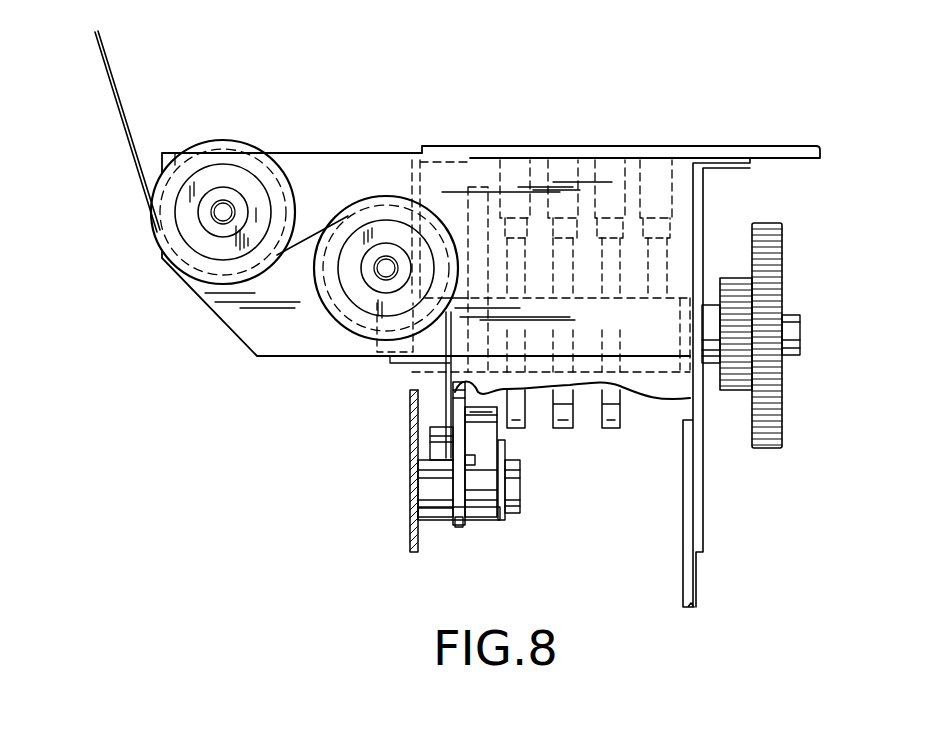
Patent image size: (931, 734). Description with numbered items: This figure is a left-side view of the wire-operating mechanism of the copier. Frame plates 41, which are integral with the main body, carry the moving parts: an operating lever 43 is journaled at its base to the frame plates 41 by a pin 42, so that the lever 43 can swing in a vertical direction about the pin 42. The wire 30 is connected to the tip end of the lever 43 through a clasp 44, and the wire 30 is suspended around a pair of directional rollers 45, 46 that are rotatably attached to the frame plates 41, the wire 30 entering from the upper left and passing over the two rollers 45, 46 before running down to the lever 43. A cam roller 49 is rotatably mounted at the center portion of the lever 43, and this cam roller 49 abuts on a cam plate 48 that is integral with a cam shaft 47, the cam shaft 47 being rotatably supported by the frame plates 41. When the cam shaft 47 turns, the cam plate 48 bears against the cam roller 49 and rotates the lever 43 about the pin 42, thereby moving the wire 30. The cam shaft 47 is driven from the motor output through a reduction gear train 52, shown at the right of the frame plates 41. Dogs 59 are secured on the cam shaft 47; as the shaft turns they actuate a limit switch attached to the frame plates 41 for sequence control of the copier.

The wire 30 is at (122, 110).
The frame plates 41 is at (584, 168).
The pin 42 is at (517, 492).
The operating lever 43 is at (458, 523).
The clasp 44 is at (471, 462).
The directional roller 45 is at (372, 197).
The directional roller 46 is at (250, 146).
The cam shaft 47 is at (654, 370).
The cam plate 48 is at (473, 192).
The cam roller 49 is at (487, 442).
The reduction gear train 52 is at (786, 243).
The dogs 59 is at (664, 266).